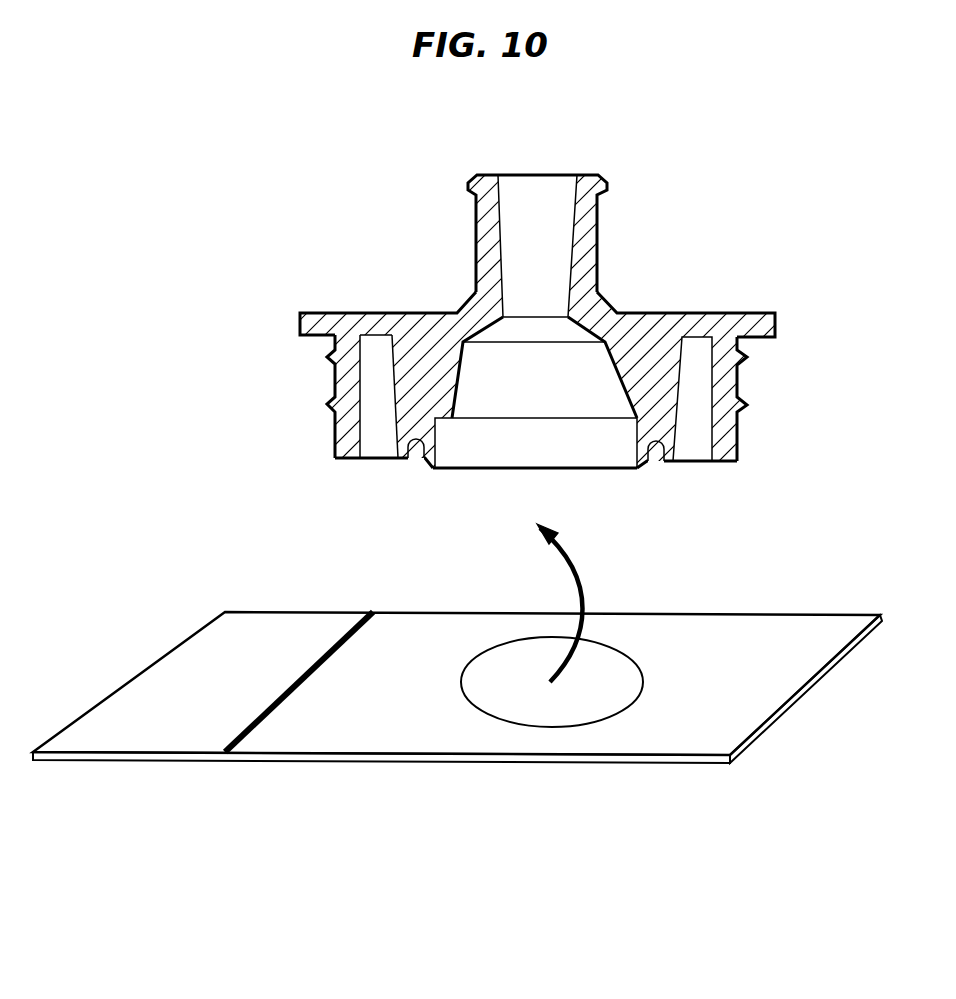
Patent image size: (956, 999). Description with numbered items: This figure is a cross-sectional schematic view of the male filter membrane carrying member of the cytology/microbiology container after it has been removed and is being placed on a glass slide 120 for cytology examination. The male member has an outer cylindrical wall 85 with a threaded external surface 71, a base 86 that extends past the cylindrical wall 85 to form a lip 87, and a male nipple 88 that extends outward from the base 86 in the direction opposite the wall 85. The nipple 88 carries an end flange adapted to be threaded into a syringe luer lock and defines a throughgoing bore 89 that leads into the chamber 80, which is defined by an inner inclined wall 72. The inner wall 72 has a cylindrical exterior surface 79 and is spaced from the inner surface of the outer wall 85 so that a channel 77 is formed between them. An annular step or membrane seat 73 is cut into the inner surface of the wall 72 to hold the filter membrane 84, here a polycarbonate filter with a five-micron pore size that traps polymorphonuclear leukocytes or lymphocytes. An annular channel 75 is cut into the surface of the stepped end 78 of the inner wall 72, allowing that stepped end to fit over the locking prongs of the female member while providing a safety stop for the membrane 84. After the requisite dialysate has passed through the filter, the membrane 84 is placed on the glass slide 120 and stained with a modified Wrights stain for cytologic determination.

The threaded external surface 71 is at (330, 360).
The inner inclined wall 72 is at (455, 388).
The annular step or membrane seat 73 is at (670, 461).
The annular channel 75 is at (412, 458).
The channel 77 is at (375, 437).
The stepped end 78 is at (431, 468).
The cylindrical exterior surface 79 is at (637, 468).
The chamber 80 is at (551, 394).
The filter membrane 84 is at (588, 455).
The outer cylindrical wall 85 is at (722, 373).
The base 86 is at (417, 313).
The lip 87 is at (776, 327).
The male nipple 88 is at (597, 230).
The throughgoing bore 89 is at (530, 195).
The glass slide 120 is at (468, 766).